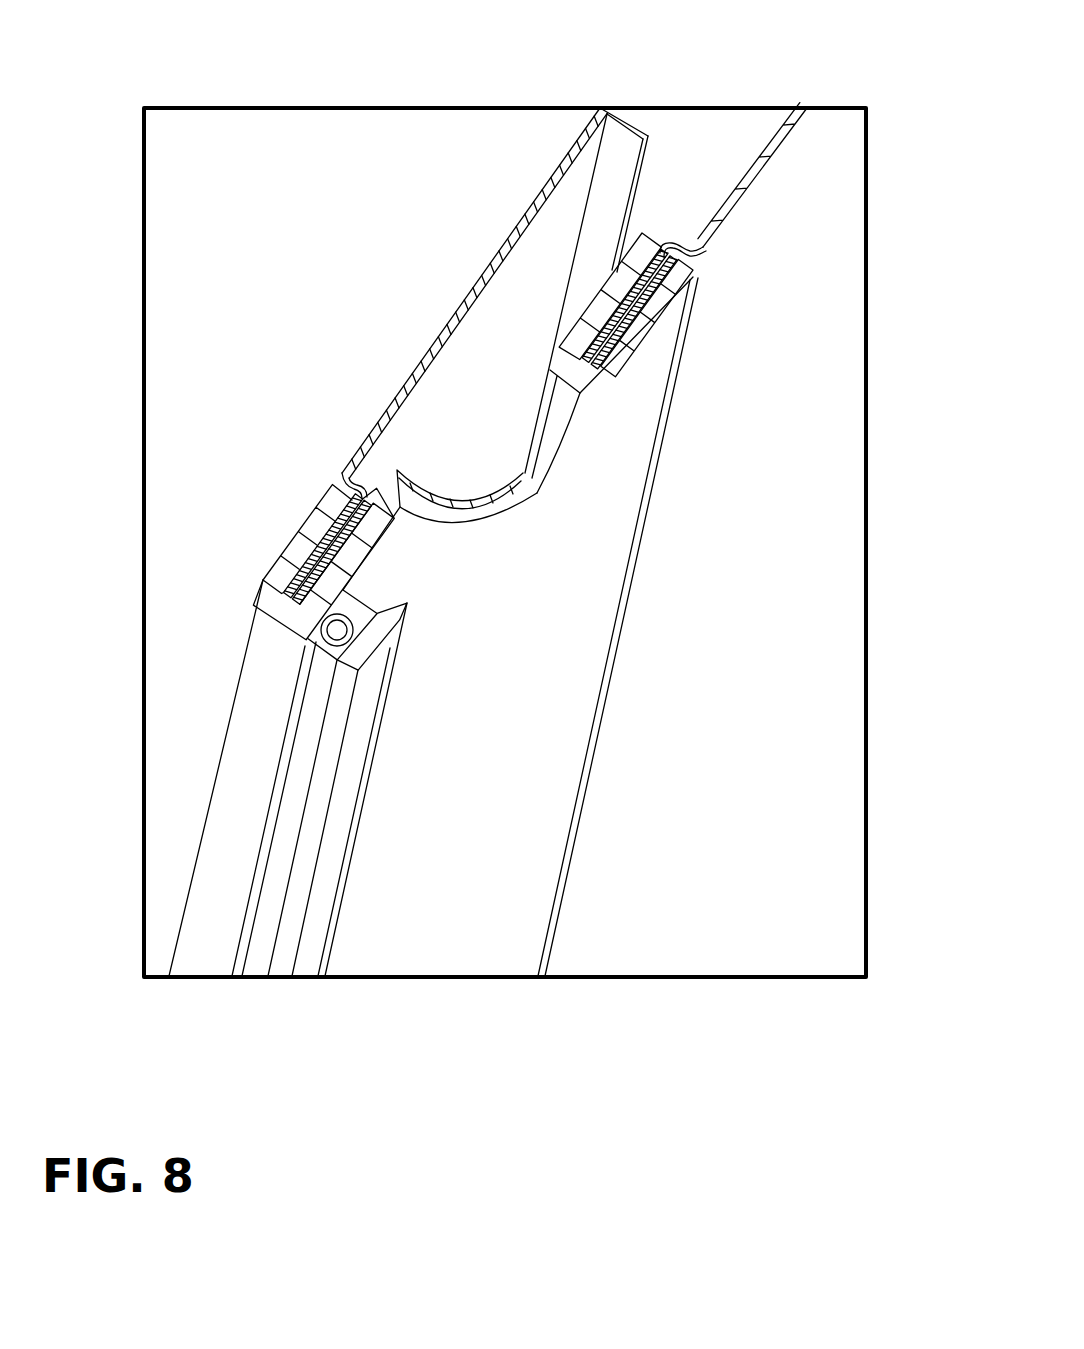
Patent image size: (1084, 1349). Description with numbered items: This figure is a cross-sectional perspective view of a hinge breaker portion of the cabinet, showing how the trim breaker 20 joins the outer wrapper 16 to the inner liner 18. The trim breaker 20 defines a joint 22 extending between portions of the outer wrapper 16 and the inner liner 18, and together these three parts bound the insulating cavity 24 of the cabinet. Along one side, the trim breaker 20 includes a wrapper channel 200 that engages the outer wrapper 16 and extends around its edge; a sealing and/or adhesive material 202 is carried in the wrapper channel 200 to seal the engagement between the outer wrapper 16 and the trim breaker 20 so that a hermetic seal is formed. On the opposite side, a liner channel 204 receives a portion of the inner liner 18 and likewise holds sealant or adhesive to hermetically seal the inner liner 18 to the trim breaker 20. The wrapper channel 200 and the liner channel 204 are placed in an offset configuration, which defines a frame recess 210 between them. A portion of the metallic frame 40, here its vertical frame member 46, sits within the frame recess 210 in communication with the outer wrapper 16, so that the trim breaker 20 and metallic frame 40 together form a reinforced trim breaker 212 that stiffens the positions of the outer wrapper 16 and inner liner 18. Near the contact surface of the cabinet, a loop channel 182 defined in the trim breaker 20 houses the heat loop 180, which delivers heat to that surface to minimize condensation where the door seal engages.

The outer wrapper 16 is at (543, 179).
The inner liner 18 is at (742, 206).
The trim breaker 20 is at (400, 910).
The joint 22 is at (454, 572).
The insulating cavity 24 is at (730, 143).
The metallic frame 40 is at (703, 165).
The vertical frame member 46 is at (618, 165).
The heat loop 180 is at (325, 642).
The loop channel 182 is at (353, 607).
The wrapper channel 200 is at (313, 549).
The sealing and/or adhesive material 202 is at (590, 365).
The liner channel 204 is at (651, 316).
The frame recess 210 is at (460, 444).
The reinforced trim breaker 212 is at (290, 478).